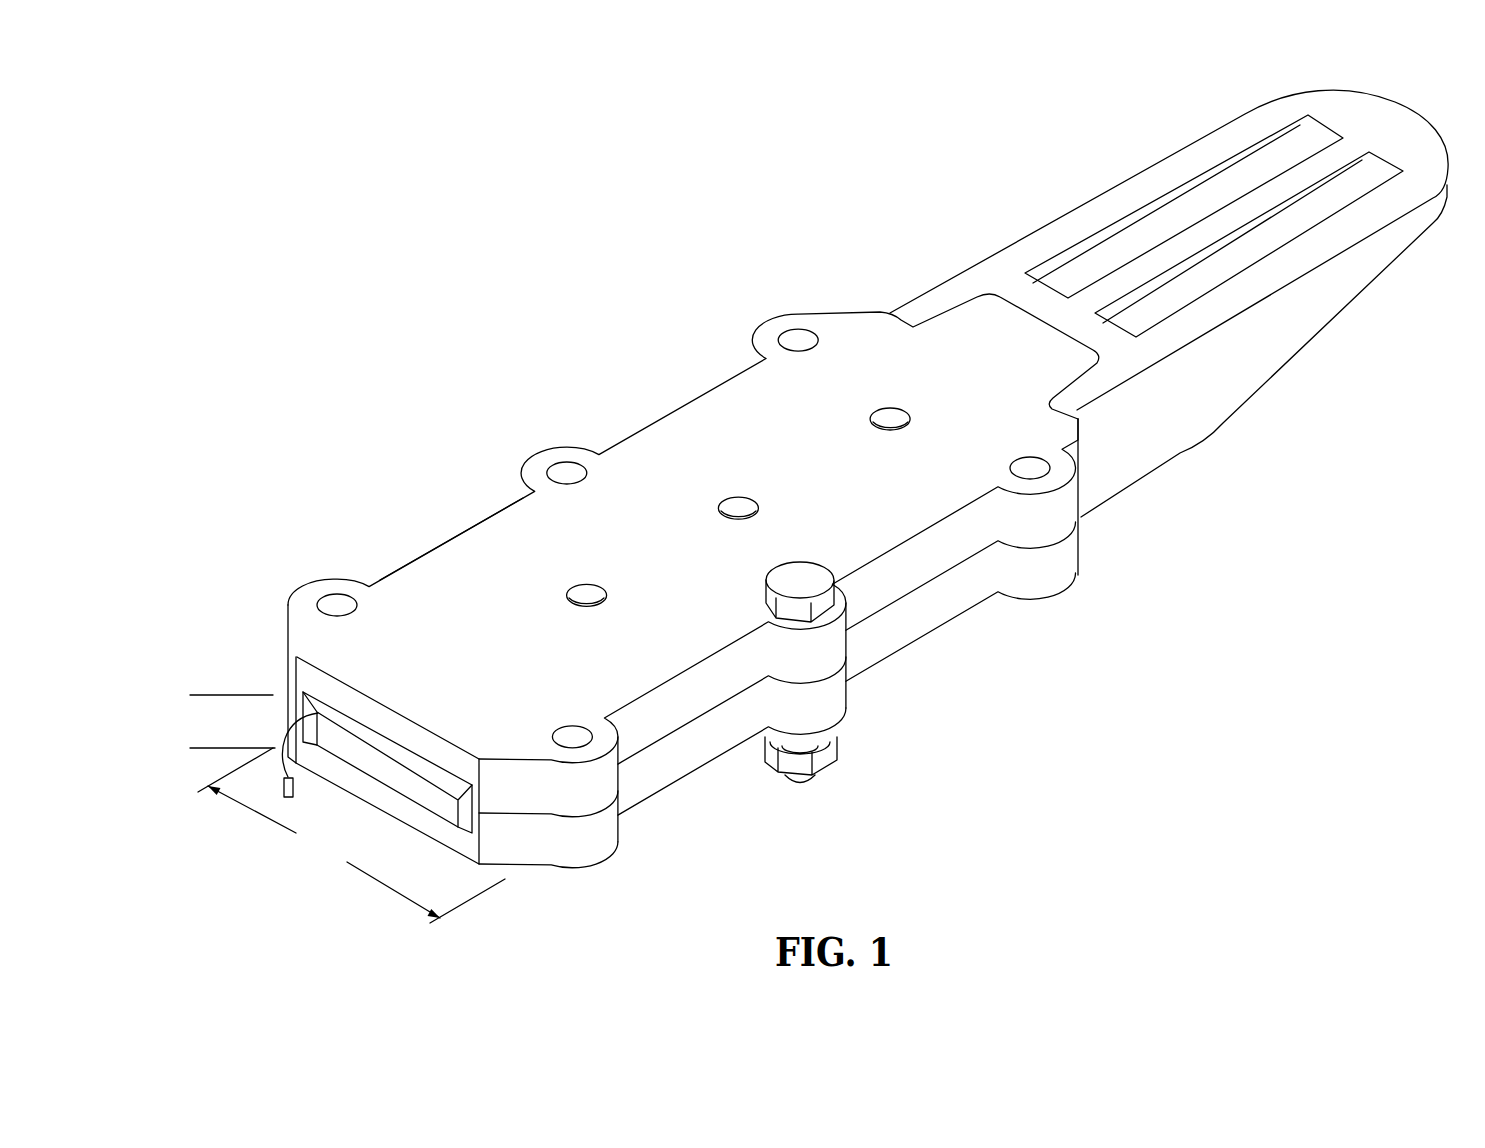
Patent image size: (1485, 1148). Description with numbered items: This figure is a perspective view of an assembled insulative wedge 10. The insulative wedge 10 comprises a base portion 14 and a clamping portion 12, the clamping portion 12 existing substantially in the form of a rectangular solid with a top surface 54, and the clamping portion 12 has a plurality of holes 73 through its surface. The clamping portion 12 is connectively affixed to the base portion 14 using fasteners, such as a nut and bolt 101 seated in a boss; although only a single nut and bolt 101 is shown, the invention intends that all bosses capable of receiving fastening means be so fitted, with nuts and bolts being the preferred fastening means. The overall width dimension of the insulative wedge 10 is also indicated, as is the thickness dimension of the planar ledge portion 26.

The insulative wedge 10 is at (505, 380).
The clamping portion 12 is at (399, 560).
The base portion 14 is at (1132, 447).
The planar ledge portion 26 is at (428, 768).
The top surface 54 is at (497, 541).
The holes 73 is at (885, 422).
The nut and bolt 101 is at (803, 577).